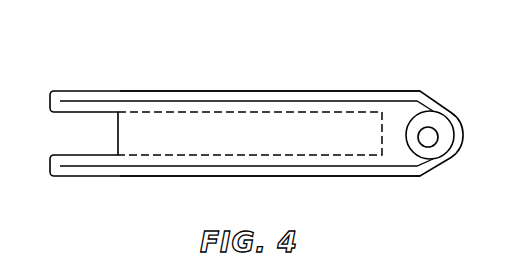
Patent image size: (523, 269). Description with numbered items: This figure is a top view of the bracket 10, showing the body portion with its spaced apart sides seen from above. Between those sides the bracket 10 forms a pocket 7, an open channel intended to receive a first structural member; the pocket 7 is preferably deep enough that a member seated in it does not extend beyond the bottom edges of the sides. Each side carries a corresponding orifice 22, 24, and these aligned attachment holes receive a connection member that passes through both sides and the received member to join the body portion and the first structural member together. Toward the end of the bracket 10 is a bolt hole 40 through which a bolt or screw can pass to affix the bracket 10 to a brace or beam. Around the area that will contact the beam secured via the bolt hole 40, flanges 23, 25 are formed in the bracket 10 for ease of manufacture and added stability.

The bracket 10 is at (391, 91).
The orifice 24 is at (132, 101).
The flange 25 is at (270, 100).
The orifice 22 is at (142, 172).
The flange 23 is at (330, 176).
The pocket 7 is at (138, 142).
The bolt hole 40 is at (428, 137).